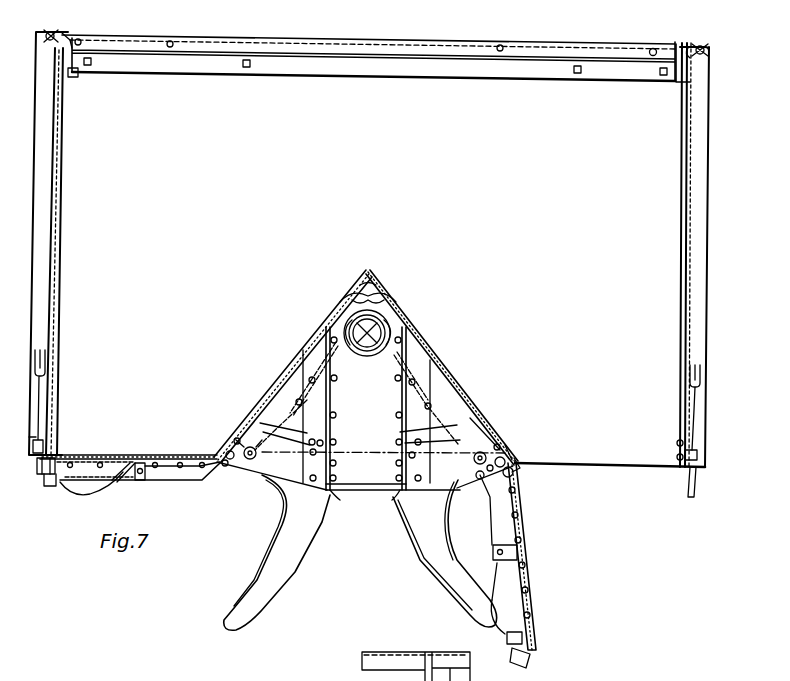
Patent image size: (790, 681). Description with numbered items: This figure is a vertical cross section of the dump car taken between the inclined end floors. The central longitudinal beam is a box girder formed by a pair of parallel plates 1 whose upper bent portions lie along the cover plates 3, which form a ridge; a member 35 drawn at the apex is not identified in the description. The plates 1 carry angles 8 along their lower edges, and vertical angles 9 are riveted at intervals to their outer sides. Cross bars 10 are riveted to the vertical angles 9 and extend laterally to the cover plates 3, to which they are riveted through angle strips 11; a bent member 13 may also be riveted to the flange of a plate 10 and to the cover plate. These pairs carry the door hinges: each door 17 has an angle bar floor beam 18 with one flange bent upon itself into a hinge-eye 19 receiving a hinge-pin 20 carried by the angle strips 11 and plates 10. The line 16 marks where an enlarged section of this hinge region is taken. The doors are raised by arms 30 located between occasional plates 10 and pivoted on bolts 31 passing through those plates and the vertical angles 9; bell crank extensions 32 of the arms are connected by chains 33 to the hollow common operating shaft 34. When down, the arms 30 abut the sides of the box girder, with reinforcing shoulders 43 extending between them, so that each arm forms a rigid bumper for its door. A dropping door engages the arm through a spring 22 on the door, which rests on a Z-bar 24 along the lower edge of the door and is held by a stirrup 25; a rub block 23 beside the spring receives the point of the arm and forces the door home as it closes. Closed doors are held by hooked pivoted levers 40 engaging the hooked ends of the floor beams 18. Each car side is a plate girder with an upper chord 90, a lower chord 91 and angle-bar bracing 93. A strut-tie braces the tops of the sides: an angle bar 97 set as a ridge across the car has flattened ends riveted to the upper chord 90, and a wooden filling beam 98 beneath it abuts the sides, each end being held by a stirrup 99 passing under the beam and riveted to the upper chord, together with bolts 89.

The parallel plates 1 is at (333, 388).
The cover plates 3 is at (290, 365).
The angles 8 is at (342, 484).
The vertical angles 9 is at (366, 408).
The cross bars 10 is at (365, 456).
The angle strips 11 is at (482, 426).
The bent member 13 is at (506, 444).
The section line 16 is at (230, 430).
The doors 17 is at (175, 460).
The angle bar floor beams 18 is at (168, 478).
The hinge-eye 19 is at (502, 481).
The hinge-pin 20 is at (518, 461).
The spring 22 is at (82, 492).
The rub block 23 is at (140, 481).
The Z-bar 24 is at (65, 468).
The stirrup 25 is at (50, 484).
The arms 30 is at (360, 552).
The bolts 31 is at (400, 449).
The bell crank extensions 32 is at (262, 470).
The chains 33 is at (300, 418).
The operating shaft 34 is at (398, 324).
The apex plate 35 is at (356, 300).
The hooked pivoted levers 40 is at (697, 411).
The reinforcing shoulders 43 is at (338, 497).
The bolts 89 is at (655, 50).
The upper chord 90 is at (703, 55).
The lower chord 91 is at (700, 470).
The angle-bar bracing 93 is at (708, 230).
The angle bar 97 is at (378, 45).
The wooden filling beam 98 is at (531, 81).
The stirrup 99 is at (677, 83).